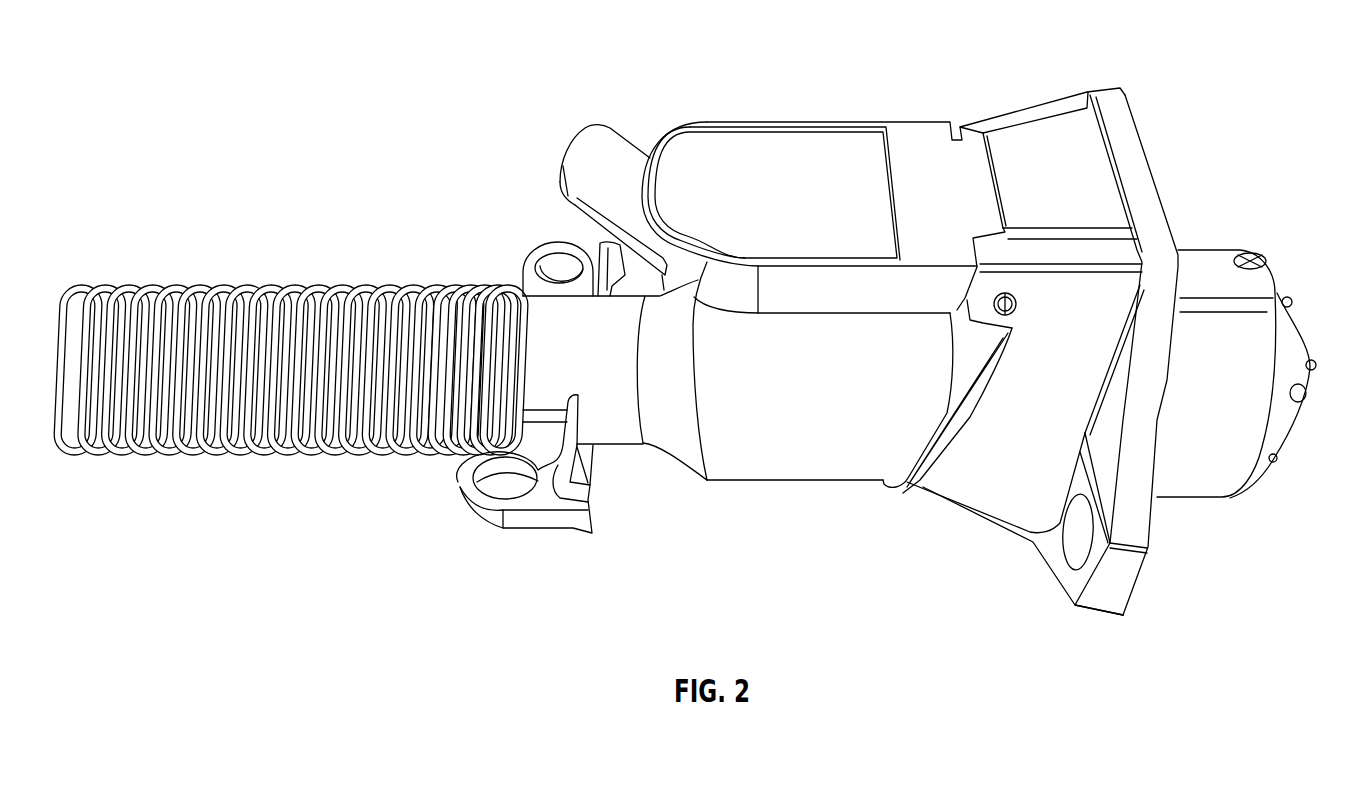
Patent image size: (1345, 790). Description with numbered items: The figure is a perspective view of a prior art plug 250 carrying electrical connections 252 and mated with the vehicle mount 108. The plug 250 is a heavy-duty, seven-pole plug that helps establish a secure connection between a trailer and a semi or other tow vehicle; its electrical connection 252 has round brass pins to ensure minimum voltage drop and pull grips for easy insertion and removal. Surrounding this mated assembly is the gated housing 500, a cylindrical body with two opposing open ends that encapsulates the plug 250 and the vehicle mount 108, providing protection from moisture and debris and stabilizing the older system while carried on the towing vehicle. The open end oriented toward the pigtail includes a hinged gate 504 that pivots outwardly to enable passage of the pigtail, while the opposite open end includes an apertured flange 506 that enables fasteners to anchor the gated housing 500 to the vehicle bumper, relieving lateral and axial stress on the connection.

The vehicle mount 108 is at (1260, 252).
The J-560 plug 250 is at (668, 495).
The electrical connections 252 is at (345, 430).
The gated housing 500 is at (1046, 92).
The hinged gate 504 is at (830, 157).
The apertured flange 506 is at (1132, 570).